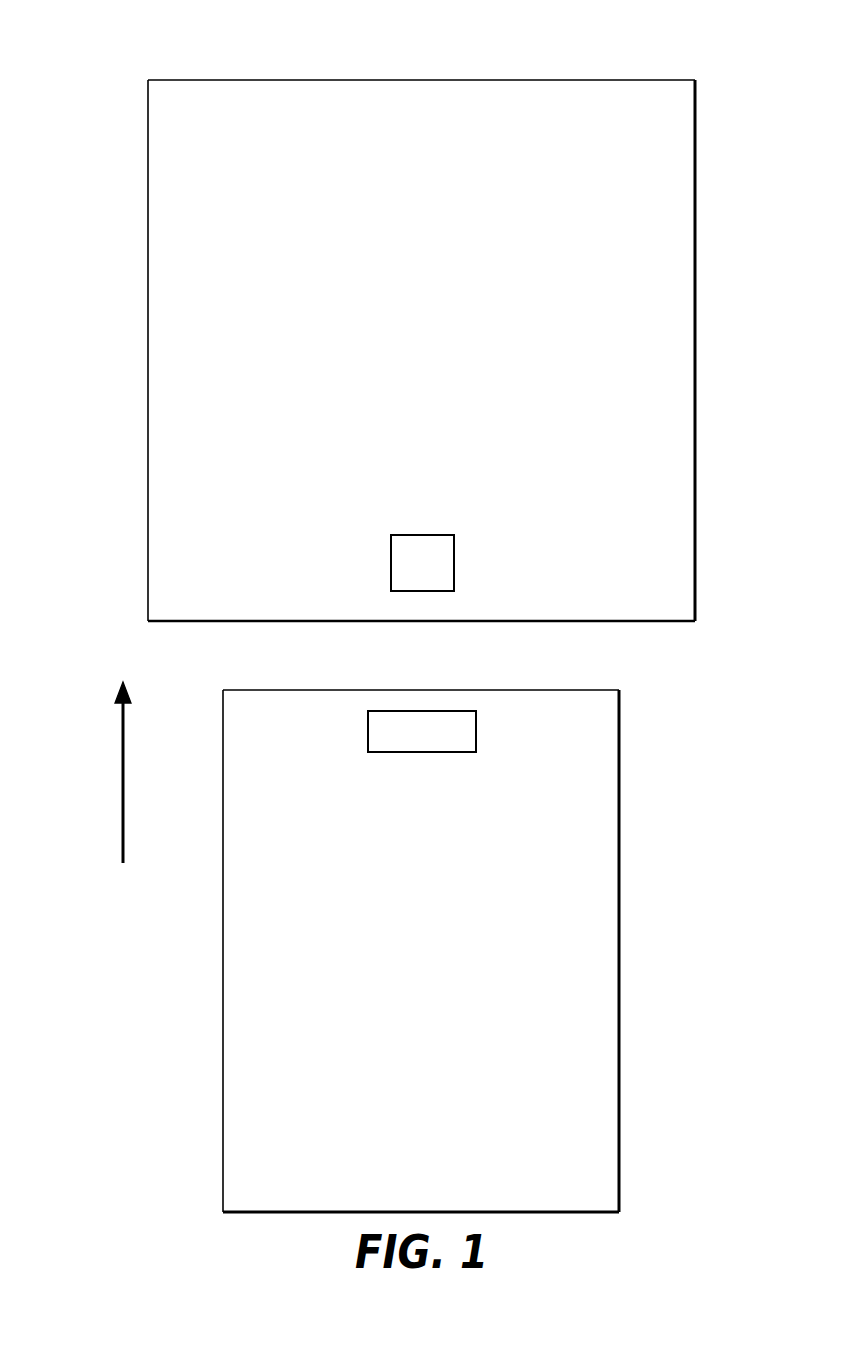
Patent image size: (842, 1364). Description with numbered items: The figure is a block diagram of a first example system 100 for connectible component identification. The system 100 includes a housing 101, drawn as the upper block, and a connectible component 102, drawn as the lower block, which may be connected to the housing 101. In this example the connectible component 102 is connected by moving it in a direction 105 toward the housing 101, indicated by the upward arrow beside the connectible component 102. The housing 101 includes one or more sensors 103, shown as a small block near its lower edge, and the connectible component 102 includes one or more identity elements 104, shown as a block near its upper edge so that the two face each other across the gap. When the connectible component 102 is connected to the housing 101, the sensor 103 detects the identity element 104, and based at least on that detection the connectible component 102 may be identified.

The system 100 is at (127, 51).
The housing 101 is at (697, 563).
The connectible component 102 is at (621, 768).
The sensor 103 is at (434, 583).
The identity element 104 is at (433, 720).
The direction 105 is at (121, 769).